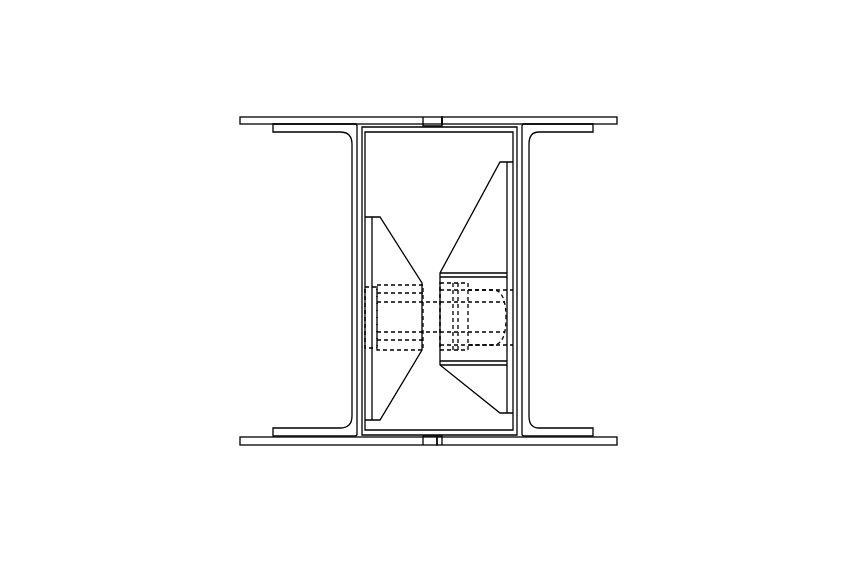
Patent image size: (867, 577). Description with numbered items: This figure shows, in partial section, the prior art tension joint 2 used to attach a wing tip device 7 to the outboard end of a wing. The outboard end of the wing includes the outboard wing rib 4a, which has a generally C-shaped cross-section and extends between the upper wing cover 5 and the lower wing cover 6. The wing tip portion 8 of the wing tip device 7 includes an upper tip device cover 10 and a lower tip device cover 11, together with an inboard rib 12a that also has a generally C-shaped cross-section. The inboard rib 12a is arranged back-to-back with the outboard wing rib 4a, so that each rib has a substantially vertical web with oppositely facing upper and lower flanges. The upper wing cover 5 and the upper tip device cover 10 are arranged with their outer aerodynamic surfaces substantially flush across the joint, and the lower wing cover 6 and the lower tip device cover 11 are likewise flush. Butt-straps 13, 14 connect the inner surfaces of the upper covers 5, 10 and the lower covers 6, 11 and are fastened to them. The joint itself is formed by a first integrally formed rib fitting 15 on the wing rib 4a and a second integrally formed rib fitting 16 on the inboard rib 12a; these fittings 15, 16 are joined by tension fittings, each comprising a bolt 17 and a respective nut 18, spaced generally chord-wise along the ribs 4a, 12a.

The first panel 2 is at (214, 234).
The outboard wing rib 4a is at (356, 161).
The upper wing cover 5 is at (262, 117).
The lower wing cover 6 is at (281, 446).
The wing tip device 7 is at (606, 229).
The wing tip portion 8 is at (663, 82).
The upper tip device cover 10 is at (517, 117).
The lower tip device cover 11 is at (583, 446).
The inboard rib 12a is at (531, 199).
The butt-strap 13 is at (420, 116).
The butt-strap 14 is at (434, 437).
The first integrally formed rib fitting 15 is at (383, 376).
The second integrally formed rib fitting 16 is at (496, 385).
The bolt 17 is at (400, 318).
The nut 18 is at (468, 292).